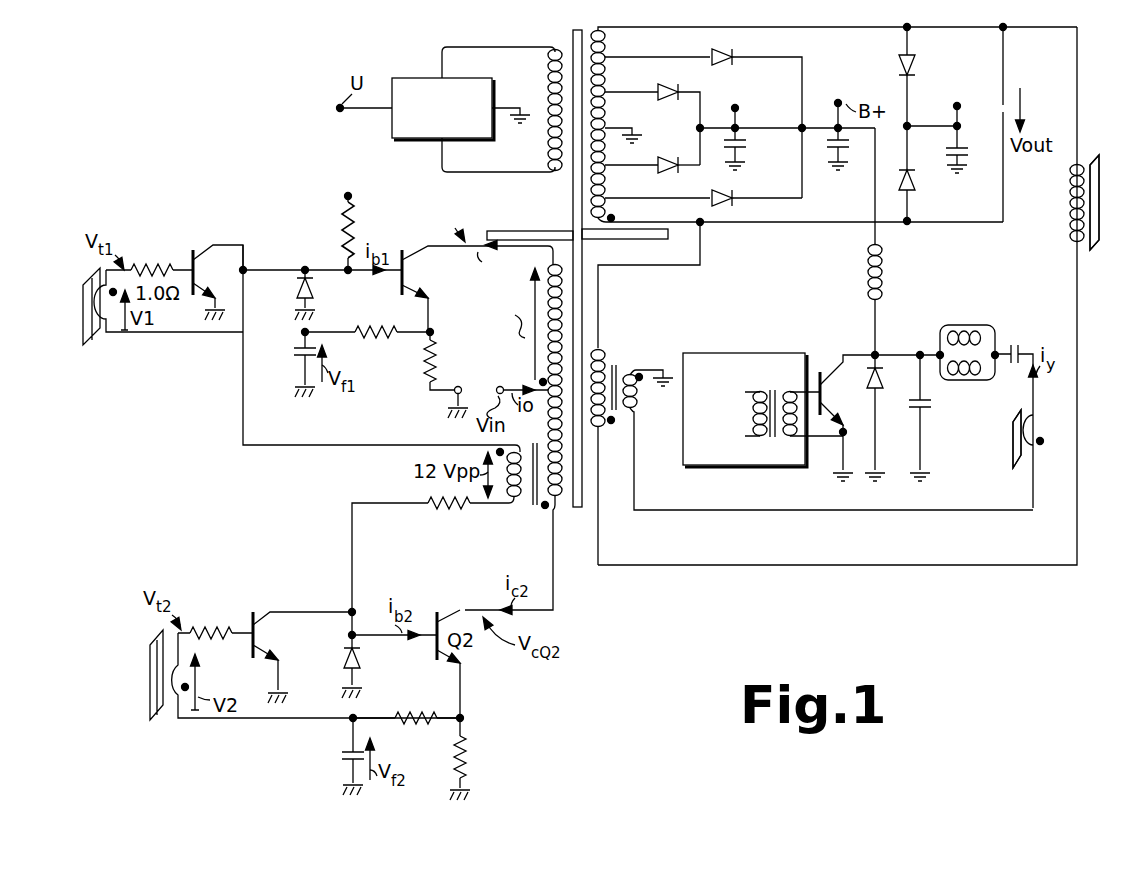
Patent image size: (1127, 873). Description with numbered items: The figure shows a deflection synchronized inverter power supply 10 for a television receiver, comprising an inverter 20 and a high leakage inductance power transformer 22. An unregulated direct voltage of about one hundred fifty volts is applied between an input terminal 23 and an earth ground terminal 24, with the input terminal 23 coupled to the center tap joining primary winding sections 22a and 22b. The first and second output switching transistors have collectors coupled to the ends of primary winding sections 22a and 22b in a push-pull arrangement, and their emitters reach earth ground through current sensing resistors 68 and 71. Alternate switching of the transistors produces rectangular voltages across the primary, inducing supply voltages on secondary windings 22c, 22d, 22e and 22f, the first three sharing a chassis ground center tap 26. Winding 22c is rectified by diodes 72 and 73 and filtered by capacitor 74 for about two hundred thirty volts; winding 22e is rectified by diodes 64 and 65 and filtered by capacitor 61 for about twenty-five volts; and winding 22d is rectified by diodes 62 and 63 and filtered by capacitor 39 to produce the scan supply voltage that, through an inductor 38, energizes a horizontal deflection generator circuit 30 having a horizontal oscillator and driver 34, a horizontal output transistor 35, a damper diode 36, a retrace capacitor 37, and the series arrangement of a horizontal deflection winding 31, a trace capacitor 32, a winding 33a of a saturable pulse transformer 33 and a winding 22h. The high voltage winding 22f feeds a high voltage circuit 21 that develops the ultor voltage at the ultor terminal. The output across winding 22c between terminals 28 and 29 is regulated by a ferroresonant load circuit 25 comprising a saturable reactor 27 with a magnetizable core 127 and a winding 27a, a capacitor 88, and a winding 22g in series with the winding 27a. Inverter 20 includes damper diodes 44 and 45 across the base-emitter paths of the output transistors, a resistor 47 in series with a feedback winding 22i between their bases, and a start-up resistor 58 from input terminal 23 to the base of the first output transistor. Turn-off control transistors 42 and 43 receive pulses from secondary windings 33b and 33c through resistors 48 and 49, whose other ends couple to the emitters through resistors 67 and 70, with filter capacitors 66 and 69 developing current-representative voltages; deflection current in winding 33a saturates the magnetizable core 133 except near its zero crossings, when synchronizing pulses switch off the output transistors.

The power supply 10 is at (257, 79).
The inverter 20 is at (189, 504).
The high voltage circuit 21 is at (392, 138).
The power transformer 22 is at (556, 213).
The primary winding section 22a is at (540, 268).
The primary winding section 22b is at (555, 511).
The secondary output winding 22c is at (605, 45).
The secondary output winding 22d is at (605, 80).
The secondary output winding 22e is at (605, 116).
The high voltage winding 22f is at (544, 81).
The winding 22g is at (602, 356).
The winding 22h is at (828, 440).
The feedback winding 22i is at (507, 510).
The input terminal 23 is at (352, 196).
The earth ground terminal 24 is at (455, 395).
The ferroresonant load circuit 25 is at (1058, 226).
The chassis ground center tap 26 is at (640, 130).
The saturable reactor 27 is at (1108, 139).
The saturable reactor winding 27a is at (1068, 185).
The terminal 28 is at (904, 30).
The terminal 29 is at (907, 224).
The horizontal deflection generator circuit 30 is at (853, 549).
The horizontal deflection winding 31 is at (989, 320).
The S-shaping or trace capacitor 32 is at (1012, 343).
The saturable pulse transformer 33 is at (1007, 449).
The primary winding of pulse transformer 33a is at (1040, 432).
The secondary winding of pulse transformer 33b is at (103, 335).
The secondary winding of pulse transformer 33c is at (170, 715).
The horizontal oscillator and driver 34 is at (758, 468).
The horizontal output transistor 35 is at (847, 418).
The damper diode 36 is at (880, 381).
The retrace capacitor 37 is at (928, 410).
The inductor 38 is at (879, 282).
The capacitor 39 is at (852, 155).
The turn-off control transistor 42 is at (197, 270).
The turn-off control transistor 43 is at (256, 639).
The damper diode 44 is at (315, 292).
The damper diode 45 is at (359, 664).
The resistor 47 is at (413, 566).
The resistor 48 is at (149, 258).
The resistor 49 is at (215, 632).
The start-up resistor 58 is at (343, 228).
The capacitor 61 is at (740, 145).
The diode 62 is at (732, 55).
The diode 63 is at (732, 203).
The diode 64 is at (678, 92).
The diode 65 is at (668, 176).
The filter capacitor 66 is at (288, 344).
The resistor 67 is at (387, 320).
The current sensing resistor 68 is at (430, 340).
The filter capacitor 69 is at (341, 754).
The resistor 70 is at (440, 714).
The current sensing resistor 71 is at (467, 748).
The diode 72 is at (910, 62).
The diode 73 is at (908, 192).
The capacitor 74 is at (960, 157).
The capacitor 88 is at (992, 120).
The magnetizable core 127 is at (1108, 190).
The magnetizable core 133 is at (1015, 468).